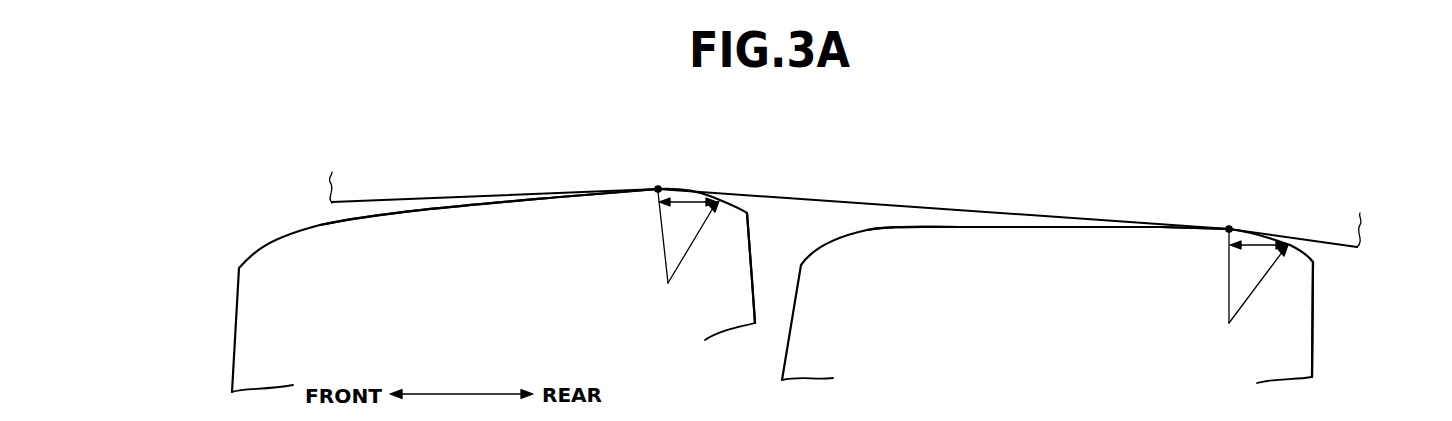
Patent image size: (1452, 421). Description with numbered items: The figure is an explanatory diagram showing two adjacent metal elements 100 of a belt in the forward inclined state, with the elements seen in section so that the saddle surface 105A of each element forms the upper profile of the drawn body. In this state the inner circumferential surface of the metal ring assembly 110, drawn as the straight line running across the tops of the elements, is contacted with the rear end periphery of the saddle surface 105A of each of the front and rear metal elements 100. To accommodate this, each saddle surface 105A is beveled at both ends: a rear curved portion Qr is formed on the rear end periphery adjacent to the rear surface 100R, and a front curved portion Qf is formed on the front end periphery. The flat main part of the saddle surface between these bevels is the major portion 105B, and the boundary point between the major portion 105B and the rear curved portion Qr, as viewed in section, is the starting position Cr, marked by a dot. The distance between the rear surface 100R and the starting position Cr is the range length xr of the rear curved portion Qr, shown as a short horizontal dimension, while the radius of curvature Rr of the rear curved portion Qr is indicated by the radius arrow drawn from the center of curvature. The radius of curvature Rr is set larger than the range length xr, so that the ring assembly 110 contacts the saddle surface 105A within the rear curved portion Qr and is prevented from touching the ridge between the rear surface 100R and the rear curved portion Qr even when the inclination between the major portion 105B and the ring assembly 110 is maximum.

The metal element 100 is at (235, 333).
The rear surface 100R is at (752, 257).
The saddle surface 105A is at (370, 207).
The major portion 105B is at (410, 213).
The metal ring assembly 110 is at (1333, 245).
The front curved portion Qf is at (278, 240).
The starting position of rear curved portion Cr is at (658, 186).
The rear curved portion Qr is at (685, 185).
The radius of curvature of rear curved portion Rr is at (973, 257).
The range length of rear curved portion xr is at (688, 205).